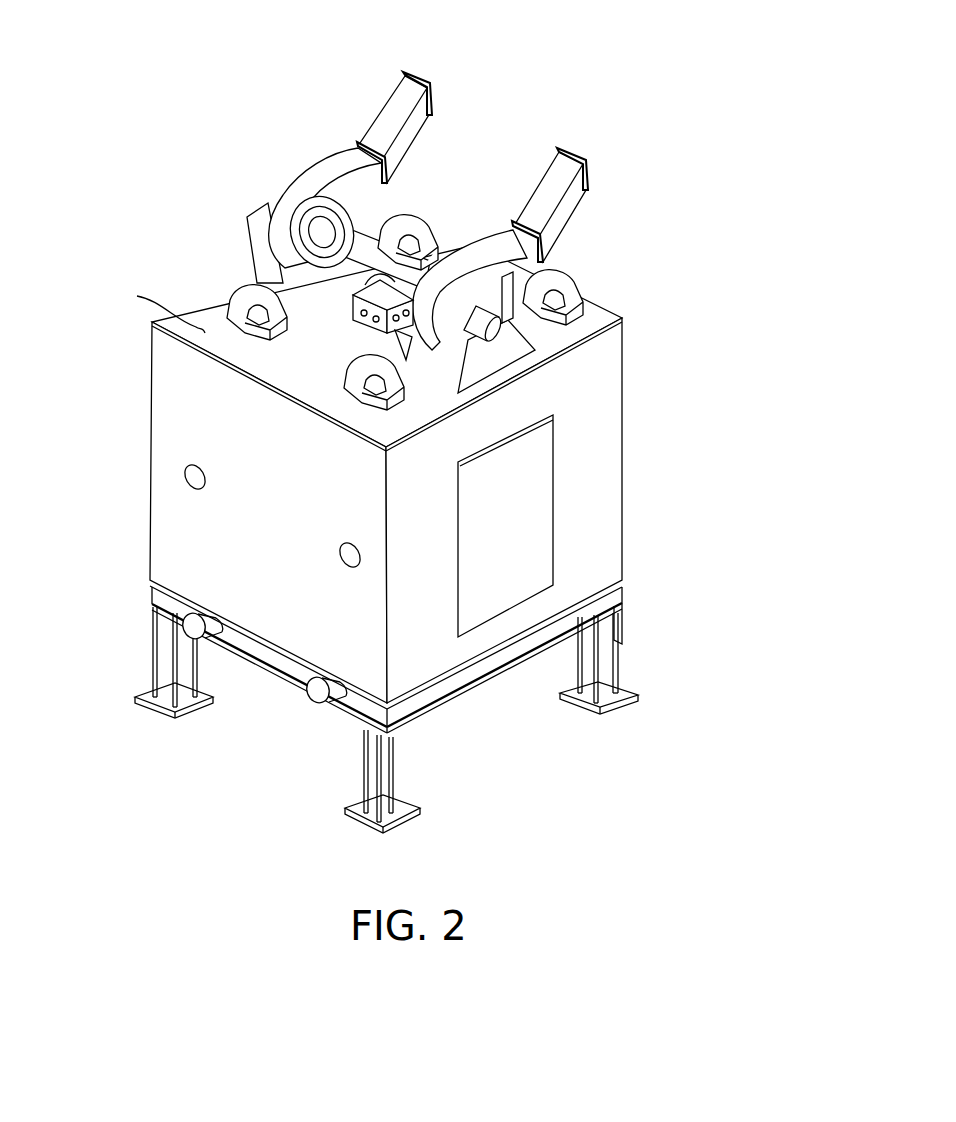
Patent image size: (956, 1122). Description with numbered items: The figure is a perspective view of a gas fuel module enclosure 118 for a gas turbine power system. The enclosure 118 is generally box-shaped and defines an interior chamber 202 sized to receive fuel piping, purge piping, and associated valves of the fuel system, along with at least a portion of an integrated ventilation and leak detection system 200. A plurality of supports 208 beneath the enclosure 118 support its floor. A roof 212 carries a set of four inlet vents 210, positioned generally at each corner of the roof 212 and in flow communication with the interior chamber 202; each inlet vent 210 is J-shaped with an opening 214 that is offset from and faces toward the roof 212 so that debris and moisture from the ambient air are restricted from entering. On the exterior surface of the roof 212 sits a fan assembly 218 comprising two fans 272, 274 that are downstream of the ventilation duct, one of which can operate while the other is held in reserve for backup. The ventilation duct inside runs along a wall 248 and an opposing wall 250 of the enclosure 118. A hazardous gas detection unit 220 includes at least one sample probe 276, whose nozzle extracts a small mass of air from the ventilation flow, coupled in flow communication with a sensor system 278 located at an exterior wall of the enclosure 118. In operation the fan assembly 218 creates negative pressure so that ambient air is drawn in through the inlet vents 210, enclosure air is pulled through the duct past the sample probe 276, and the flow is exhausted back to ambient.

The integrated ventilation and leak detection system 200 is at (457, 62).
The gas fuel module enclosure 118 is at (433, 447).
The interior chamber 202 is at (448, 477).
The supports 208 is at (153, 650).
The inlet vent 210 is at (345, 355).
The roof 212 is at (149, 304).
The opening 214 is at (351, 389).
The fan assembly 218 is at (310, 143).
The hazardous gas detection unit 220 is at (352, 298).
The wall 248 is at (289, 517).
The opposing wall 250 is at (672, 358).
The fan 272 is at (290, 195).
The fan 274 is at (575, 204).
The sample probe 276 is at (422, 376).
The sensor system 278 is at (531, 529).